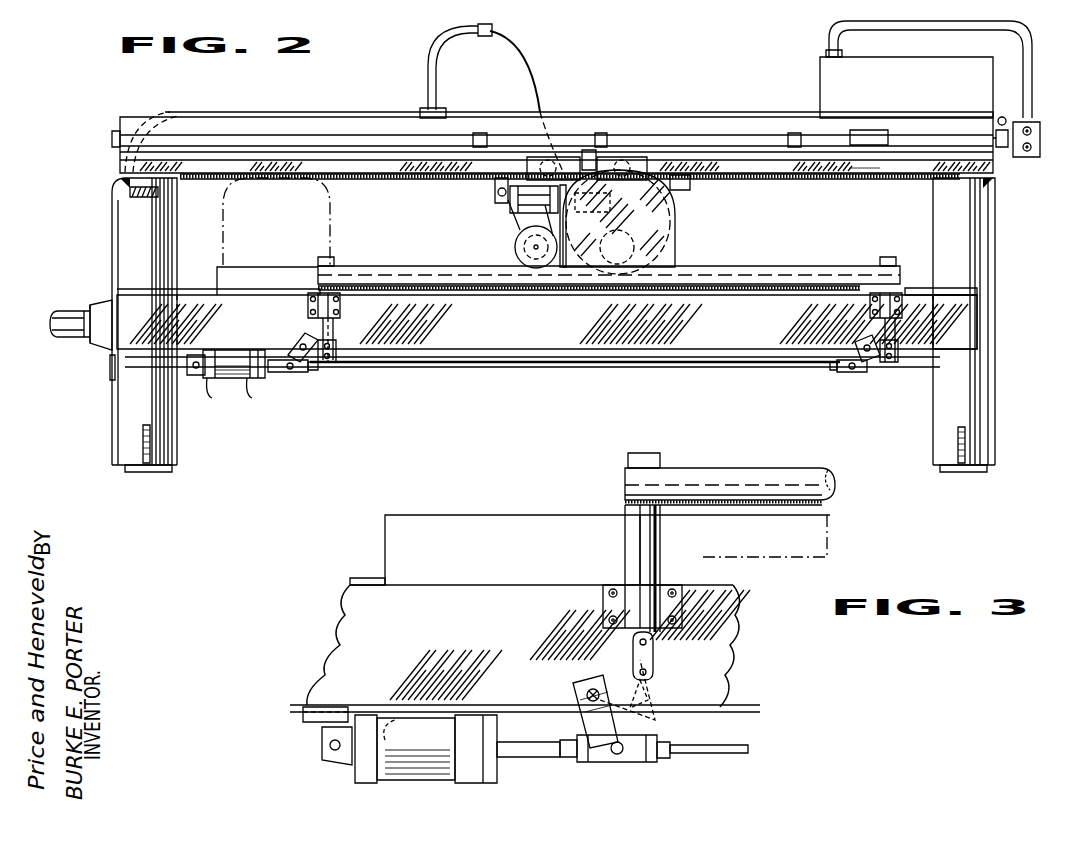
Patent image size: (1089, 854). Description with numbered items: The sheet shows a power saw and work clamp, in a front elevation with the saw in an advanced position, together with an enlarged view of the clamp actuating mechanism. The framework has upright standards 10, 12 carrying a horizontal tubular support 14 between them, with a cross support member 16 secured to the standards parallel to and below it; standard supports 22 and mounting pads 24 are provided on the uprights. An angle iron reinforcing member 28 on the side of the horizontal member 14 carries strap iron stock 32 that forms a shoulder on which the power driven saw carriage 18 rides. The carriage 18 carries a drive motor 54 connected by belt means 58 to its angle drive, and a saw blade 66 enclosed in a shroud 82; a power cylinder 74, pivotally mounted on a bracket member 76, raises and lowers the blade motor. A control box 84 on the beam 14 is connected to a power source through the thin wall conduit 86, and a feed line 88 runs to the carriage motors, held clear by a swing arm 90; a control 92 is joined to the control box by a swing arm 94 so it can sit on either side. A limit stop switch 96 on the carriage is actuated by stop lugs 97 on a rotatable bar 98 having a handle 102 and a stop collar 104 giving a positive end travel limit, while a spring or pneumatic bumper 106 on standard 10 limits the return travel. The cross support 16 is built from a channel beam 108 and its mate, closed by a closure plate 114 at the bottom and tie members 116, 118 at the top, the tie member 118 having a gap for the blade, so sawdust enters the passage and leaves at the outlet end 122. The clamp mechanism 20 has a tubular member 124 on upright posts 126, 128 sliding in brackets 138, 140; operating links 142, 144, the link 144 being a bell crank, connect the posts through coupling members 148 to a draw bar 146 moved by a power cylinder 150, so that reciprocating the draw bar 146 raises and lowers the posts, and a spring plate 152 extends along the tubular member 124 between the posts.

In FIG. 2, the upright standard 10 is at (128, 240).
In FIG. 2, the upright standard 12 is at (945, 220).
In FIG. 2, the horizontal tubular support 14 is at (370, 125).
In FIG. 2, the cross support member 16 is at (509, 328).
In FIG. 3, the cross support member 16 is at (353, 624).
In FIG. 2, the power driven saw carriage 18 is at (686, 198).
In FIG. 2, the clamp mechanism 20 is at (609, 263).
In FIG. 3, the clamp mechanism 20 is at (741, 465).
In FIG. 2, the standard support 22 is at (143, 445).
In FIG. 2, the mounting pad 24 is at (122, 178).
In FIG. 2, the angle iron reinforcing member 28 is at (866, 165).
In FIG. 2, the strap iron stock 32 is at (800, 174).
In FIG. 2, the drive motor 54 is at (515, 247).
In FIG. 2, the belt means 58 is at (520, 222).
In FIG. 2, the saw blade 66 is at (680, 232).
In FIG. 2, the power cylinder 74 is at (515, 200).
In FIG. 2, the bracket member 76 is at (495, 188).
In FIG. 2, the shroud 82 is at (345, 213).
In FIG. 2, the control box 84 is at (828, 80).
In FIG. 3, the control box 84 is at (392, 535).
In FIG. 2, the thin wall conduit 86 is at (670, 113).
In FIG. 2, the feed line 88 is at (528, 68).
In FIG. 2, the swing arm 90 is at (428, 64).
In FIG. 2, the control 92 is at (1041, 130).
In FIG. 2, the swing arm 94 is at (1030, 76).
In FIG. 2, the limit stop switch 96 is at (585, 155).
In FIG. 2, the stop lug 97 is at (473, 135).
In FIG. 2, the rotatable bar 98 is at (254, 132).
In FIG. 2, the handle 102 is at (1006, 118).
In FIG. 2, the stop collar 104 is at (866, 133).
In FIG. 2, the spring or pneumatic bumper 106 is at (140, 196).
In FIG. 2, the channel beam 108 is at (955, 325).
In FIG. 2, the closure plate 114 is at (648, 350).
In FIG. 2, the tie member 116 is at (135, 293).
In FIG. 3, the tie member 116 is at (360, 578).
In FIG. 2, the tie member 118 is at (950, 290).
In FIG. 2, the outlet end 122 is at (100, 335).
In FIG. 2, the tubular member 124 is at (775, 272).
In FIG. 3, the tubular member 124 is at (745, 472).
In FIG. 2, the upright post 126 is at (330, 330).
In FIG. 3, the upright post 126 is at (637, 543).
In FIG. 2, the upright post 128 is at (890, 325).
In FIG. 2, the bracket 138 is at (308, 302).
In FIG. 3, the bracket 138 is at (603, 607).
In FIG. 2, the bracket 140 is at (900, 300).
In FIG. 3, the operating link 142 is at (645, 652).
In FIG. 2, the operating link 144 is at (290, 350).
In FIG. 3, the operating link 144 is at (598, 680).
In FIG. 2, the draw bar 146 is at (585, 366).
In FIG. 3, the draw bar 146 is at (725, 745).
In FIG. 2, the coupling member 148 is at (300, 372).
In FIG. 3, the coupling member 148 is at (635, 755).
In FIG. 2, the power cylinder 150 is at (230, 370).
In FIG. 3, the power cylinder 150 is at (418, 758).
In FIG. 3, the spring plate 152 is at (322, 732).